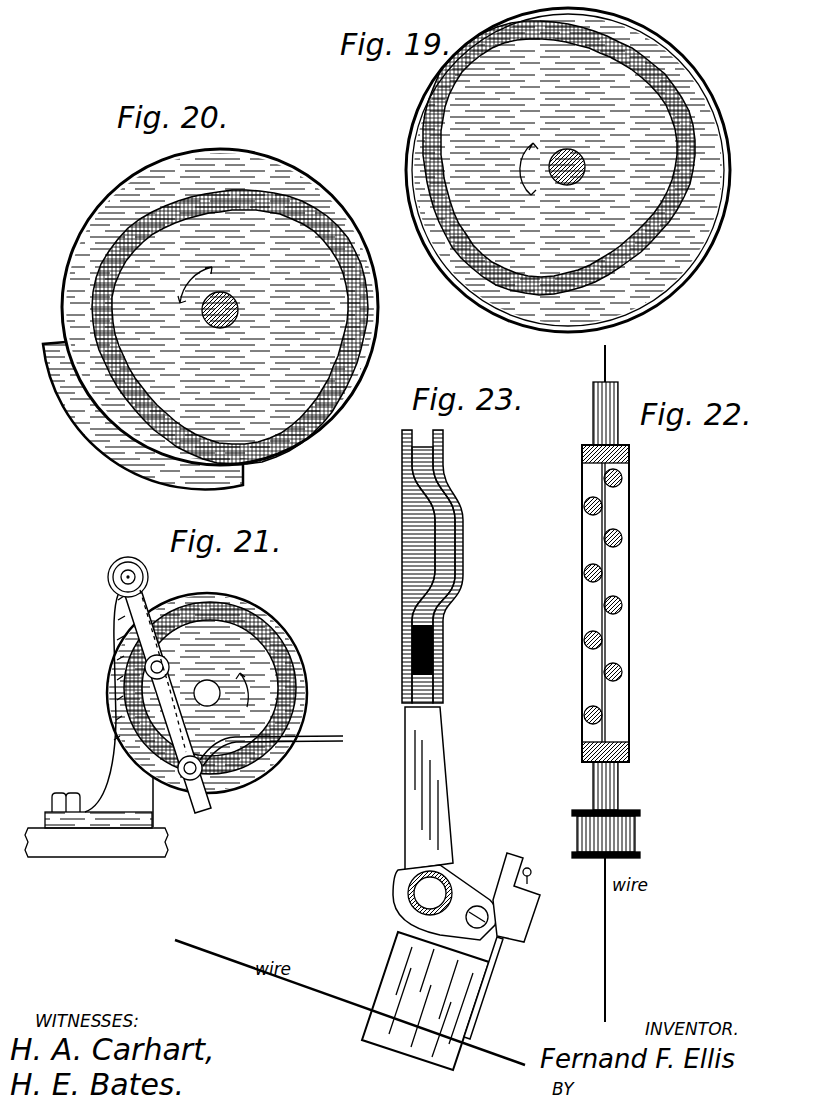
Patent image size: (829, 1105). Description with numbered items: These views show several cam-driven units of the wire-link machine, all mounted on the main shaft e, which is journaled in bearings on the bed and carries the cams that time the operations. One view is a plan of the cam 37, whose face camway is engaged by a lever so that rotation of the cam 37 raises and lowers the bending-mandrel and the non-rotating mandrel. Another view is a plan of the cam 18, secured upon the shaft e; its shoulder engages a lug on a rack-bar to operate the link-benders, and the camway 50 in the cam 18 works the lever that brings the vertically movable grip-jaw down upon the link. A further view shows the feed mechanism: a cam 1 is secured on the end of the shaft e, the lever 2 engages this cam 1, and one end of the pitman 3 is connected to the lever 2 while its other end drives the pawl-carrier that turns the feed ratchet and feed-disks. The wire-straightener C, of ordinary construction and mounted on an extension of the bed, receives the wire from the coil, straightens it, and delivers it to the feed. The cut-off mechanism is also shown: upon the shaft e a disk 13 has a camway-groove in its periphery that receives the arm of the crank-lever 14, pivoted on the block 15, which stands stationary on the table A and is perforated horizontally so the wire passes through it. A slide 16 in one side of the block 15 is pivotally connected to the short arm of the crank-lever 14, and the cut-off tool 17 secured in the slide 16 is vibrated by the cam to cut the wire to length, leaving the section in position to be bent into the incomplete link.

In FIG. 19, the cam 37 is at (559, 158).
In FIG. 19, the main shaft e is at (585, 168).
In FIG. 20, the main shaft e is at (238, 306).
In FIG. 21, the main shaft e is at (207, 693).
In FIG. 20, the camway 50 is at (230, 327).
In FIG. 20, the cam 18 is at (183, 392).
In FIG. 21, the cam 1 is at (256, 624).
In FIG. 21, the lever 2 is at (159, 685).
In FIG. 21, the pitman 3 is at (271, 752).
In FIG. 21, the table A is at (96, 825).
In FIG. 22, the wire-straightener C is at (615, 683).
In FIG. 23, the disk 13 is at (402, 548).
In FIG. 23, the crank-lever 14 is at (447, 792).
In FIG. 23, the block 15 is at (397, 946).
In FIG. 23, the slide 16 is at (526, 897).
In FIG. 23, the cut-off tool 17 is at (488, 1001).